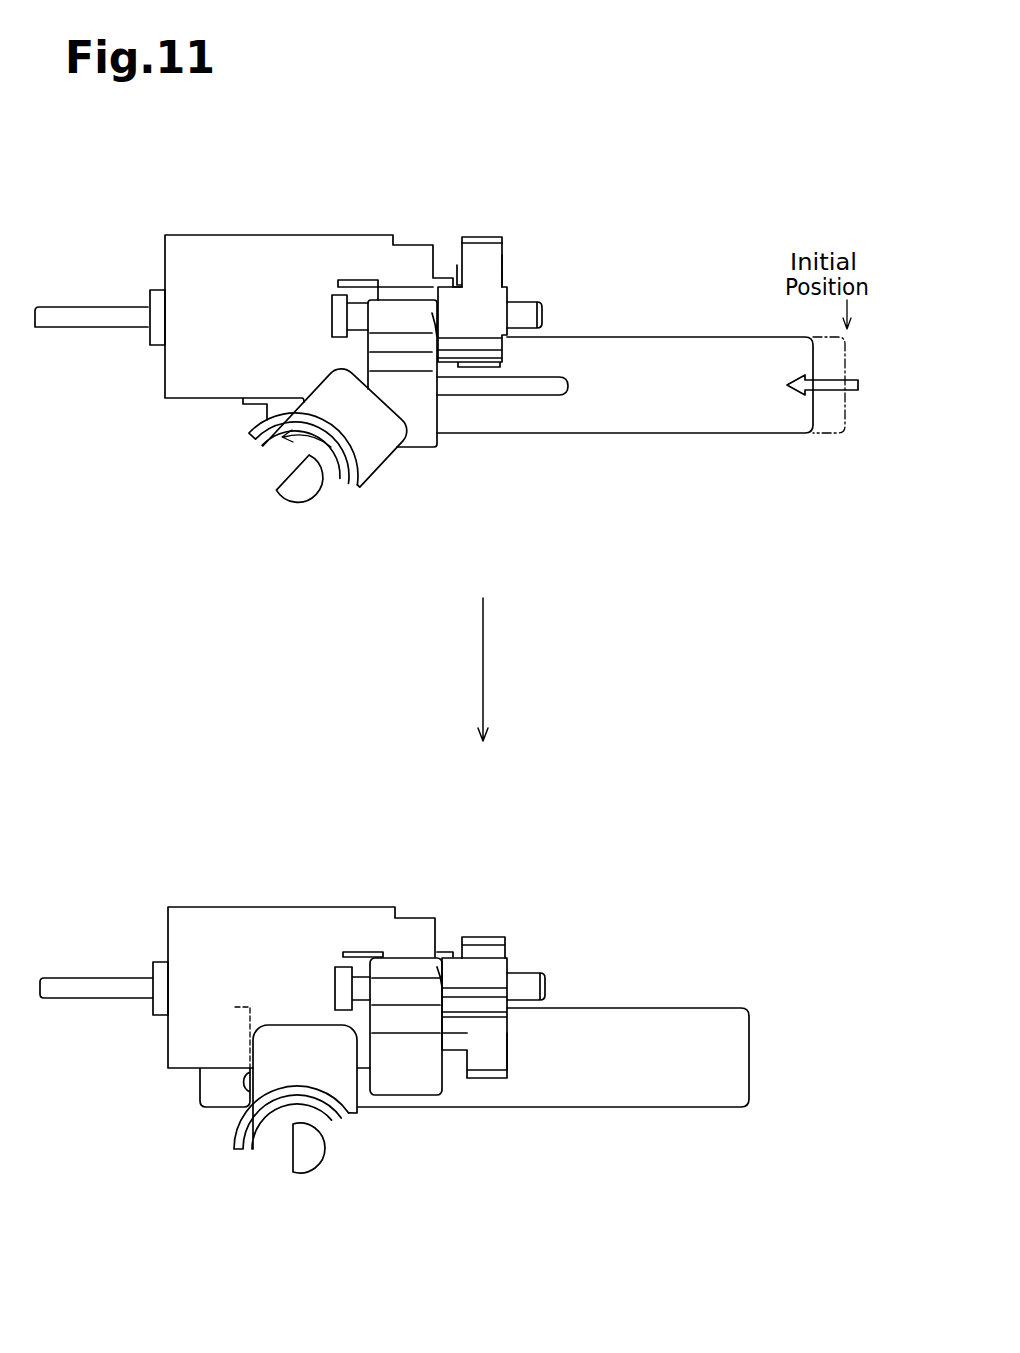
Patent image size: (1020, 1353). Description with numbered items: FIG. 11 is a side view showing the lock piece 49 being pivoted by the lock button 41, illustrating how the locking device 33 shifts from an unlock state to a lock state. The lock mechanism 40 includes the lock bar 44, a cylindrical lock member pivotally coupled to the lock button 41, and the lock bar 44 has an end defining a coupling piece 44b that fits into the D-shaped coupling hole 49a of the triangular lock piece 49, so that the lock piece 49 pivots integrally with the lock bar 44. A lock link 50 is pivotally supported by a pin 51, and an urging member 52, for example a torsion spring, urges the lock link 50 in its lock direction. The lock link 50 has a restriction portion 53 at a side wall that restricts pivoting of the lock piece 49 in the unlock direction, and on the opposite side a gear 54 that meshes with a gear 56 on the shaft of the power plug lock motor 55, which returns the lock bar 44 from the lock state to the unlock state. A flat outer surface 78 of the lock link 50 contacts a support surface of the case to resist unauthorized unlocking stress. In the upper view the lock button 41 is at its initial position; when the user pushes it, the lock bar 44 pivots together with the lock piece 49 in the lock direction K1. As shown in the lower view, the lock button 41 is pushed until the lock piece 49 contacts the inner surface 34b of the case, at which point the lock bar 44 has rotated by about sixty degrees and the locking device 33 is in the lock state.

The locking device 33 is at (87, 140).
The inner surface of the case 34b is at (237, 1007).
The lock mechanism 40 is at (460, 495).
The lock button 41 is at (750, 338).
The lock bar 44 is at (232, 492).
The coupling piece 44b is at (282, 496).
The lock piece 49 is at (387, 470).
The coupling hole 49a is at (314, 477).
The lock link 50 is at (503, 254).
The pin 51 is at (534, 301).
The urging member 52 is at (394, 290).
The restriction portion 53 is at (432, 416).
The gear 54 is at (488, 235).
The power plug lock motor 55 is at (246, 236).
The gear 56 is at (484, 937).
The outer surface 78 is at (503, 268).
The lock direction K1 is at (331, 440).